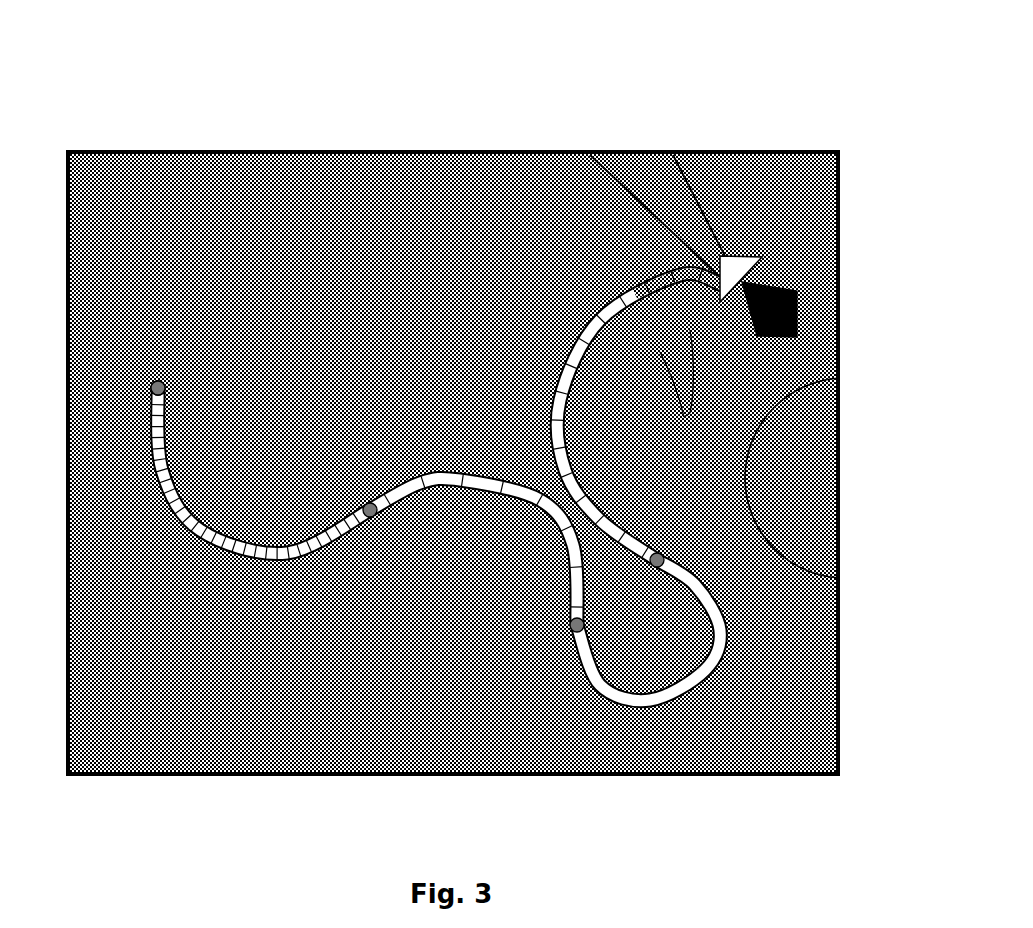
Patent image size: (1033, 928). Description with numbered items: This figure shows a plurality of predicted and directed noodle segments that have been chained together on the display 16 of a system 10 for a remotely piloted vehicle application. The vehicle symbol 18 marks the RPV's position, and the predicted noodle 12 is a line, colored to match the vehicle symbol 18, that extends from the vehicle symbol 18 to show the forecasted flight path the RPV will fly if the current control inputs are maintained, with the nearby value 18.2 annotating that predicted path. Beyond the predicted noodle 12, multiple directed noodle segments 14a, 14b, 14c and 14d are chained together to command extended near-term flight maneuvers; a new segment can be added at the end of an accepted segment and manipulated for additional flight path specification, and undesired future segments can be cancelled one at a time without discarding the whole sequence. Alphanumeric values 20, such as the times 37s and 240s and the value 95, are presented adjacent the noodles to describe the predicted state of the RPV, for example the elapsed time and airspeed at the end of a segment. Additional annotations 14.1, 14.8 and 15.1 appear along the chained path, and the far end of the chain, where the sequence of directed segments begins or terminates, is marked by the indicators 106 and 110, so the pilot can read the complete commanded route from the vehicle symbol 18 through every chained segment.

The system 10 is at (506, 392).
The display 16 is at (447, 150).
The predicted noodle 12 is at (727, 290).
The vehicle symbol 18 is at (800, 292).
The route segment near destination 18.2 is at (650, 285).
The directed noodle segment 14a is at (587, 414).
The directed noodle segment 14b is at (700, 690).
The directed noodle segment 14c is at (565, 540).
The directed noodle segment 14d is at (200, 497).
The route start segment 14.1 is at (166, 392).
The route segment 14.8 is at (655, 568).
The waypoint 15.1 is at (352, 496).
The alphanumeric values 20 is at (673, 424).
The time indicator 37s is at (694, 364).
The speed indicator 95 is at (664, 374).
The start point 106 is at (150, 388).
The start marker 110 is at (158, 380).
The time indicator 240s is at (569, 628).